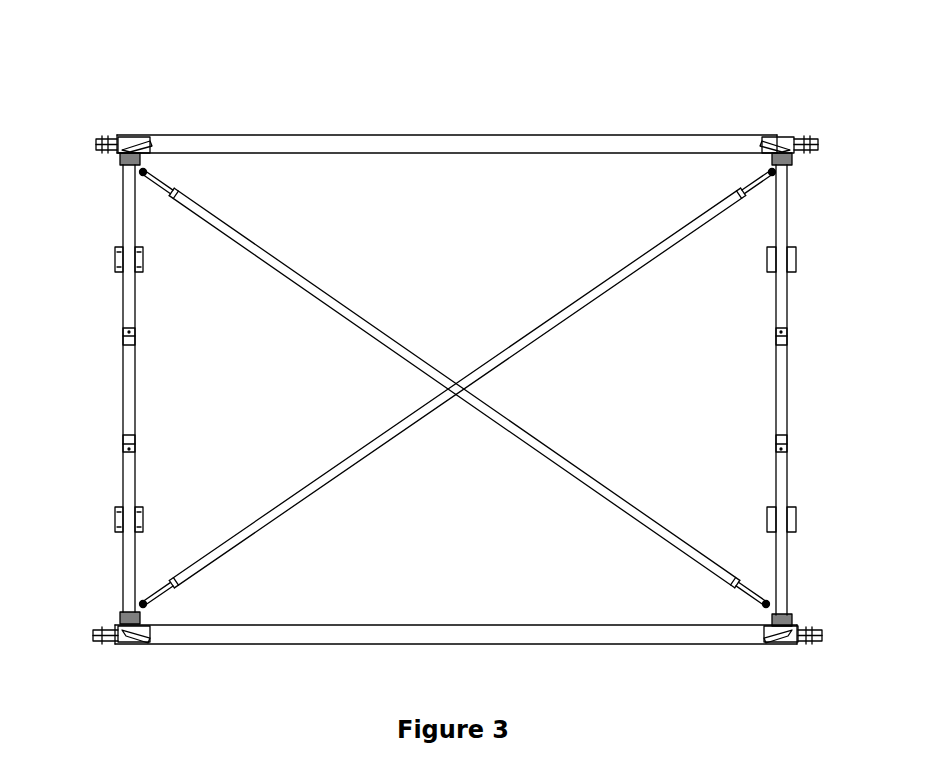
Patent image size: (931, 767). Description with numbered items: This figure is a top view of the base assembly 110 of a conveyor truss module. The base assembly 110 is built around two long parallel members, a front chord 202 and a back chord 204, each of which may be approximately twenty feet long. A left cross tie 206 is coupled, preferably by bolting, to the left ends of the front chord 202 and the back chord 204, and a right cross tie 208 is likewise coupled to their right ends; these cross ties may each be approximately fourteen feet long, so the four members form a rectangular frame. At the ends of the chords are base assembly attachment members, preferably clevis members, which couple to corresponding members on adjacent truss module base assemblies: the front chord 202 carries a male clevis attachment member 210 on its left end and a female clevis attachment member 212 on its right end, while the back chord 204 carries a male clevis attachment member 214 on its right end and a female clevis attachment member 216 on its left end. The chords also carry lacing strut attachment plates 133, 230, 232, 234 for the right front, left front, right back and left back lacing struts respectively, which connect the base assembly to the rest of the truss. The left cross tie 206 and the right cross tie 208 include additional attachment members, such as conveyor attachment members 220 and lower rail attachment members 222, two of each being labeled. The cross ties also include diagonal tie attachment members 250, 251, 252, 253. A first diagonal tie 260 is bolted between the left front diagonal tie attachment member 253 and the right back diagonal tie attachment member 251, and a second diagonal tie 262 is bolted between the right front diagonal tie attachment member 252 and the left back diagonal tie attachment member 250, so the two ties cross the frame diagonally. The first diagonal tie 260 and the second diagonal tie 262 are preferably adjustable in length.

The base assembly 110 is at (188, 100).
The lacing strut attachment plate 133 is at (782, 644).
The front chord 202 is at (551, 644).
The back chord 204 is at (334, 135).
The left cross tie 206 is at (121, 490).
The right cross tie 208 is at (786, 398).
The male clevis attachment member 210 is at (108, 641).
The female clevis attachment member 212 is at (814, 641).
The male clevis attachment member 214 is at (818, 144).
The female clevis attachment member 216 is at (96, 140).
The conveyor attachment member 220 is at (135, 340).
The lower rail attachment member 222 is at (143, 260).
The lacing strut attachment plate 230 is at (137, 644).
The lacing strut attachment plate 232 is at (787, 138).
The lacing strut attachment plate 234 is at (136, 141).
The left back diagonal tie attachment member 250 is at (147, 172).
The right back diagonal tie attachment member 251 is at (790, 172).
The right front diagonal tie attachment member 252 is at (778, 600).
The left front diagonal tie attachment member 253 is at (125, 606).
The first diagonal tie 260 is at (325, 488).
The second diagonal tie 262 is at (522, 428).